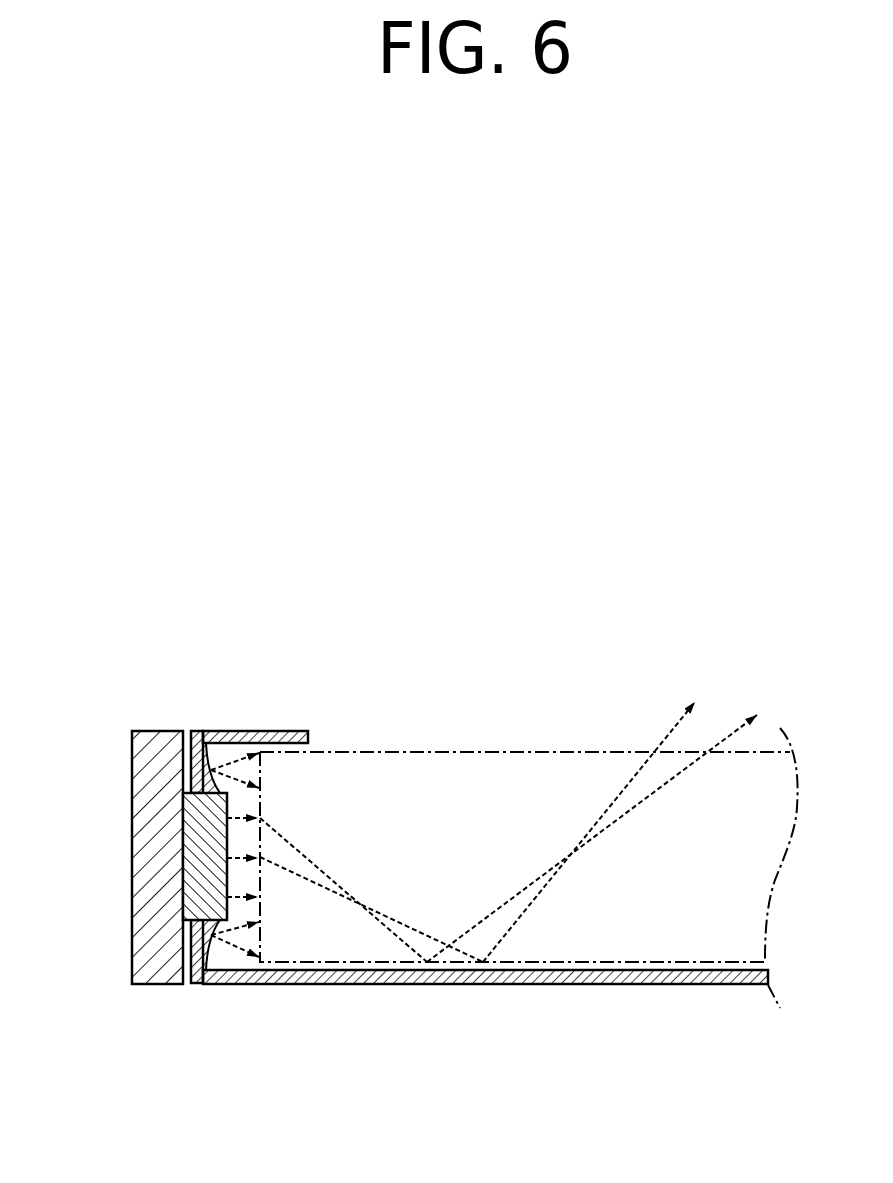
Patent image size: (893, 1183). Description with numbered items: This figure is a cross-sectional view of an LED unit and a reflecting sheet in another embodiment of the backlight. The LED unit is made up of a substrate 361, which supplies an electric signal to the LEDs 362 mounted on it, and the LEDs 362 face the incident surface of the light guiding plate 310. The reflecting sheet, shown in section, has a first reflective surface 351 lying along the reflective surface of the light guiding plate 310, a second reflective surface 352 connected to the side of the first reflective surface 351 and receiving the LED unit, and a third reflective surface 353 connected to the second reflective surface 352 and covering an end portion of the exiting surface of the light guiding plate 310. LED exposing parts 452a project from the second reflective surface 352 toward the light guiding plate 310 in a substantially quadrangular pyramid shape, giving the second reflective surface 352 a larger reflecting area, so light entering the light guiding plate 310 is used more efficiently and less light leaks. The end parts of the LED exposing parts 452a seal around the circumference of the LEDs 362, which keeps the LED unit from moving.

The light guiding plate 310 is at (565, 935).
The first reflective surface 351 is at (387, 987).
The second reflective surface 352 is at (193, 731).
The third reflective surface 353 is at (285, 731).
The substrate 361 is at (135, 810).
The LEDs 362 is at (192, 887).
The LED exposing parts 452a is at (213, 935).